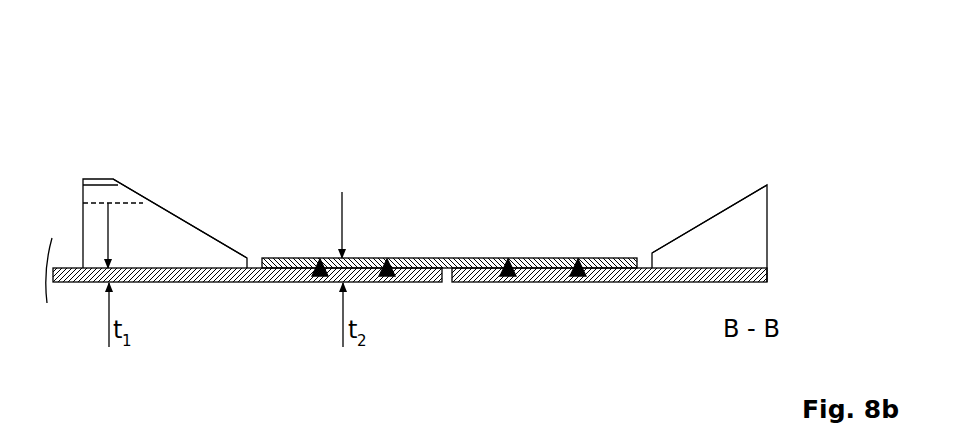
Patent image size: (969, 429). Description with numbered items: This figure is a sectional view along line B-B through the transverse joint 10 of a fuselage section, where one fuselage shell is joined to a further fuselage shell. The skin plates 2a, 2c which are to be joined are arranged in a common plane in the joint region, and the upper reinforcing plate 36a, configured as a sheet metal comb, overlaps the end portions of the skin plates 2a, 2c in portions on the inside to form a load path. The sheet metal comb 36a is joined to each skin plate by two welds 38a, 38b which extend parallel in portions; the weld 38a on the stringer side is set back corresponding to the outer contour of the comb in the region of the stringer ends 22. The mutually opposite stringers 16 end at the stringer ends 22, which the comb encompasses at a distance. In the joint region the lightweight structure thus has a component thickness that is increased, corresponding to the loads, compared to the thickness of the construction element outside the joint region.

The transverse joint 10 is at (731, 150).
The skin plate 2a is at (617, 268).
The skin plate 2c is at (283, 277).
The stringer 16 is at (167, 248).
The stringer end 22 is at (168, 195).
The upper reinforcing plate 36a is at (435, 258).
The weld 38a is at (320, 258).
The weld 38b is at (387, 258).